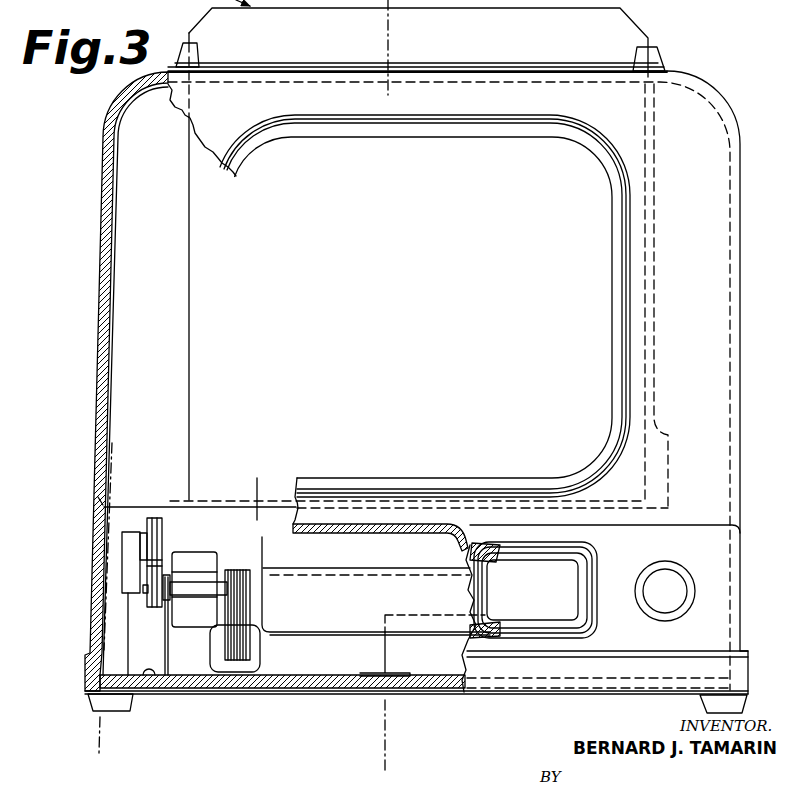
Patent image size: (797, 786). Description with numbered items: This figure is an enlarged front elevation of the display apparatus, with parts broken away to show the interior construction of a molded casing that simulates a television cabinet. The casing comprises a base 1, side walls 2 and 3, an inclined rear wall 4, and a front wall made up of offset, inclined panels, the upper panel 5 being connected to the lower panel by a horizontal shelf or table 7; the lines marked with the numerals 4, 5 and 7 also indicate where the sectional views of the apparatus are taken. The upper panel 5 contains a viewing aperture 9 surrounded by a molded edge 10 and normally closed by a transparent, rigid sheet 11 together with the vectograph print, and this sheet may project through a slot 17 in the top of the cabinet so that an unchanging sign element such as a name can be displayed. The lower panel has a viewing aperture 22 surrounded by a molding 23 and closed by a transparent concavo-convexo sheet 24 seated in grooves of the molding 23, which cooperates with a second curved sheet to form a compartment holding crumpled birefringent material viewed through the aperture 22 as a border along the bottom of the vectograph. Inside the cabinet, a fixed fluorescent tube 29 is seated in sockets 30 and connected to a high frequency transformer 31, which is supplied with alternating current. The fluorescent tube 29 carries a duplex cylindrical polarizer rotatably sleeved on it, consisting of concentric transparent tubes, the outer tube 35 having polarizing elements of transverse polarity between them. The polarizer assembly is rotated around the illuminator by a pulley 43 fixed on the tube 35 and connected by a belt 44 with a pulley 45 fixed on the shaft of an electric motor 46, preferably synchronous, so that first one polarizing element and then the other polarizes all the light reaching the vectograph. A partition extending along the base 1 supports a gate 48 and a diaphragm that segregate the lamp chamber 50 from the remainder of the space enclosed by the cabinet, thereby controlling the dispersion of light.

The base 1 is at (248, 690).
The side wall 2 is at (88, 643).
The side wall 3 is at (745, 601).
The inclined rear wall 4 is at (112, 444).
The inclined panel 5 is at (367, 770).
The horizontal shelf 7 is at (257, 478).
The viewing aperture 9 is at (602, 258).
The molded edge 10 is at (622, 325).
The transparent rigid sheet 11 is at (188, 297).
The slot 17 is at (222, 60).
The viewing aperture 22 is at (455, 582).
The molding 23 is at (593, 568).
The transparent concavo-convexo sheet 24 is at (478, 603).
The fluorescent tube 29 is at (143, 533).
The socket 30 is at (130, 544).
The high frequency transformer 31 is at (386, 660).
The transparent tube 35 is at (196, 515).
The pulley 43 is at (150, 517).
The belt 44 is at (157, 566).
The pulley 45 is at (148, 604).
The electric motor 46 is at (183, 618).
The gate 48 is at (98, 497).
The lamp chamber 50 is at (342, 633).